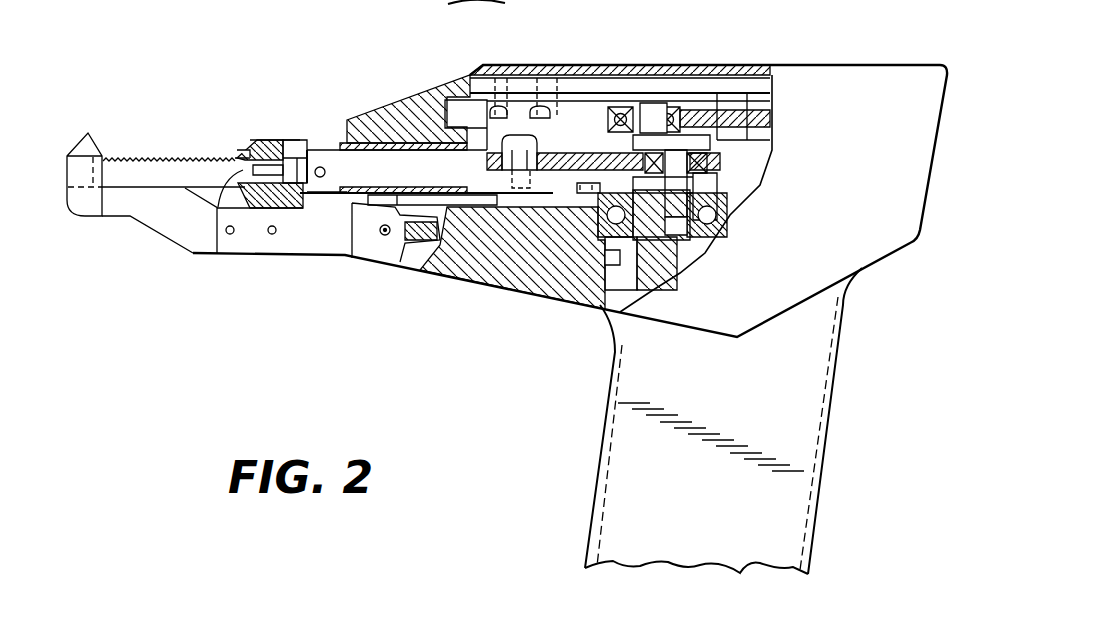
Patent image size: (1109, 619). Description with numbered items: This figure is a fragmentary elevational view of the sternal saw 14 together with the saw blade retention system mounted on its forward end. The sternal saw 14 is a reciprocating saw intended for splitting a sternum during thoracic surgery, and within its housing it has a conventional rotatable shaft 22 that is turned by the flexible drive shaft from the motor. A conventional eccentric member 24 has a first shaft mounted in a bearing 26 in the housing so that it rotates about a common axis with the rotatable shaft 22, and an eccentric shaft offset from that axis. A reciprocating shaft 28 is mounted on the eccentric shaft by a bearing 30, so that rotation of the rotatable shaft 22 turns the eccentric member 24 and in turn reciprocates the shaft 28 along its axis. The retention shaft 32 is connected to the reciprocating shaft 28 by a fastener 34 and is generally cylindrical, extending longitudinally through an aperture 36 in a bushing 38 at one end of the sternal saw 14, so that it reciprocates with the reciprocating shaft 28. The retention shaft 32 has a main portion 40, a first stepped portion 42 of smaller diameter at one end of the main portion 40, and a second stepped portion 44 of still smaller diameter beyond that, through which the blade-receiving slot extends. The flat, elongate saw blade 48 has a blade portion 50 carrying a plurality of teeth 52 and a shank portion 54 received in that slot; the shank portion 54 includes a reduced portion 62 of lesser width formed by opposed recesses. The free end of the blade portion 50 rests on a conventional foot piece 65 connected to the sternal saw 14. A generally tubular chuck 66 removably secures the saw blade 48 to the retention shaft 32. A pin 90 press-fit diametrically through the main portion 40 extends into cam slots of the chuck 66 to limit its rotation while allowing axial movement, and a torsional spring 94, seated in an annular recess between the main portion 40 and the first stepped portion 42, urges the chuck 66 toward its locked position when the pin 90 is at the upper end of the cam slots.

The sternal saw 14 is at (823, 413).
The rotatable shaft 22 is at (662, 262).
The eccentric member 24 is at (675, 162).
The bearing 26 is at (628, 115).
The reciprocating shaft 28 is at (567, 153).
The bearing 30 is at (702, 176).
The retention shaft 32 is at (448, 178).
The fastener 34 is at (513, 140).
The aperture 36 is at (308, 185).
The bushing 38 is at (348, 212).
The main portion 40 is at (403, 120).
The first stepped portion 42 is at (297, 153).
The second stepped portion 44 is at (277, 175).
The saw blade 48 is at (166, 150).
The blade portion 50 is at (167, 173).
The teeth 52 is at (127, 157).
The shank portion 54 is at (258, 155).
The reduced portion 62 is at (243, 173).
The foot piece 65 is at (132, 210).
The chuck 66 is at (264, 122).
The pin 90 is at (322, 167).
The spring 94 is at (313, 197).